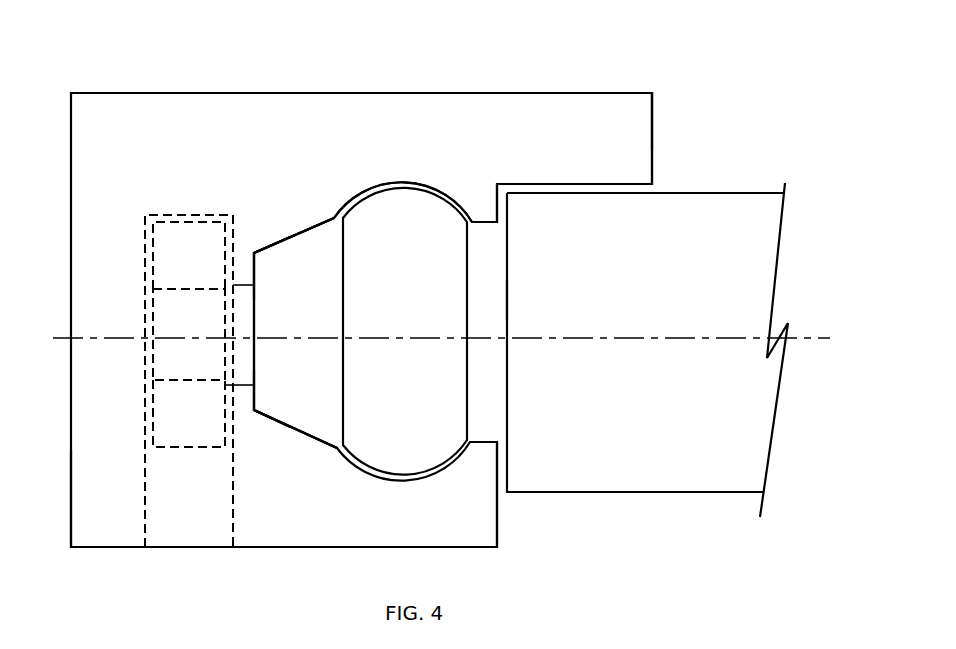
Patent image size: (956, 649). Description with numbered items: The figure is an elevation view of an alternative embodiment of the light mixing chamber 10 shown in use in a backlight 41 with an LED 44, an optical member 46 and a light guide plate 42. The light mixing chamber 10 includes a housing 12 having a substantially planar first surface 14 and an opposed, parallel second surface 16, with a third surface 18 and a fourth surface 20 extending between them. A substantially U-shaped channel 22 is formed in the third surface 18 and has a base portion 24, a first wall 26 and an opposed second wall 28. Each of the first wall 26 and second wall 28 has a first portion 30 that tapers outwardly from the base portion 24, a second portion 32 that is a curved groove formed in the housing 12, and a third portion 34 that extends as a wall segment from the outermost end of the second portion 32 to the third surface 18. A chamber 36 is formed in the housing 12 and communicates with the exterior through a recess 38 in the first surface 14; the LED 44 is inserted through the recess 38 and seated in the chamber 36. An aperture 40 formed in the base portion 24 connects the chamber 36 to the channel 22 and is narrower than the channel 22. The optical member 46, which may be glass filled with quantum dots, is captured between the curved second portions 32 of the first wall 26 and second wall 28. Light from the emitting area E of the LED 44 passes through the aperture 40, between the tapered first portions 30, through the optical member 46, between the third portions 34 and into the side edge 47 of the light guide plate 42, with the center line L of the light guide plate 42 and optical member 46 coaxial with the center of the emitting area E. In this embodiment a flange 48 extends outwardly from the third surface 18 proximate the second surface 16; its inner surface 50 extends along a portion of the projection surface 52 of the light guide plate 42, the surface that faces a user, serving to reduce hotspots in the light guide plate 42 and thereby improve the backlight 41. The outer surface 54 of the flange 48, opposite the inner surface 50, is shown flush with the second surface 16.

The light mixing chamber 10 is at (672, 108).
The housing 12 is at (143, 167).
The first surface 14 is at (480, 547).
The second surface 16 is at (351, 92).
The third surface 18 is at (497, 525).
The fourth surface 20 is at (71, 503).
The channel 22 is at (315, 334).
The base portion 24 is at (254, 398).
The first wall 26 is at (318, 228).
The second wall 28 is at (322, 441).
The first portion 30 is at (273, 249).
The second portion 32 is at (402, 190).
The third portion 34 is at (485, 224).
The chamber 36 is at (190, 218).
The recess 38 is at (145, 537).
The aperture 40 is at (242, 385).
The backlight 41 is at (712, 145).
The light guide plate 42 is at (674, 419).
The LED 44 is at (204, 435).
The optical member 46 is at (419, 390).
The side edge 47 is at (507, 296).
The flange 48 is at (614, 154).
The inner surface 50 is at (563, 186).
The projection surface 52 is at (681, 192).
The outer surface 54 is at (586, 92).
The emitting area E is at (197, 329).
The center line L is at (433, 340).